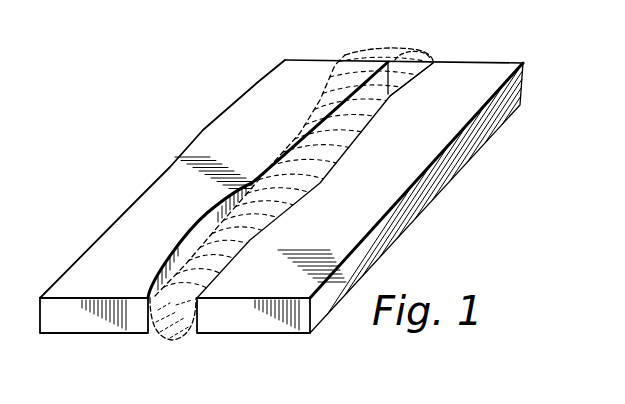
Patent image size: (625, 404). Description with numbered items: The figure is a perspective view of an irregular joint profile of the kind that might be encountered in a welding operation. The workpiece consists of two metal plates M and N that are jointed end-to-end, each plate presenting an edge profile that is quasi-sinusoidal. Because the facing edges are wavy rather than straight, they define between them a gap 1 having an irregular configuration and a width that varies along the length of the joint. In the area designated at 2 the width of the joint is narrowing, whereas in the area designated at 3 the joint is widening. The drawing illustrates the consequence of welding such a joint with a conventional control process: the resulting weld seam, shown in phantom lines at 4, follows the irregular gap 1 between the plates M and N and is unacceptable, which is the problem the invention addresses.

The gap 1 is at (291, 210).
The narrowing area 2 is at (367, 117).
The widening area 3 is at (253, 220).
The weld seam 4 is at (400, 72).
The metal plate M is at (82, 322).
The metal plate N is at (257, 323).